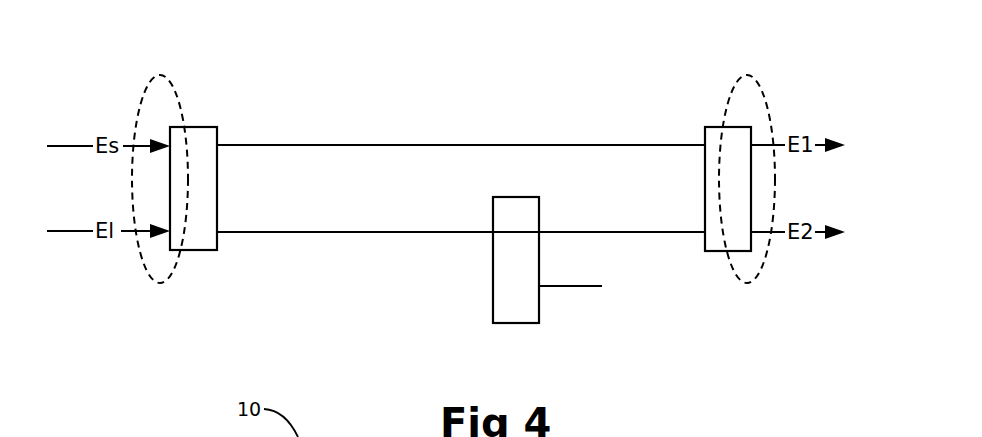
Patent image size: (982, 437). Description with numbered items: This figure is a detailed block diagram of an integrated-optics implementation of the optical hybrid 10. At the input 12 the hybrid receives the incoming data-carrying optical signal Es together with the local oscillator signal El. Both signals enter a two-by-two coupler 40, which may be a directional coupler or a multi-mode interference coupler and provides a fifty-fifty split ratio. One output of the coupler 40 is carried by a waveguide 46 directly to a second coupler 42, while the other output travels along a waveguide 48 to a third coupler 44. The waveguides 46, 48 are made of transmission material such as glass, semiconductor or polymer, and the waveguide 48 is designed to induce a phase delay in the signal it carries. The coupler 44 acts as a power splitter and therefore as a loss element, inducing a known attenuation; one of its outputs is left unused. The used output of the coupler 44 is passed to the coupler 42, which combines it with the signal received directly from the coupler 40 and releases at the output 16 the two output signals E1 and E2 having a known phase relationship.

The optical hybrid 10 is at (480, 68).
The input 12 is at (160, 75).
The output 16 is at (747, 75).
The 2×2 coupler 40 is at (193, 127).
The second coupler 42 is at (705, 237).
The third coupler 44 is at (517, 323).
The waveguide 46 is at (340, 145).
The waveguide 48 is at (340, 232).